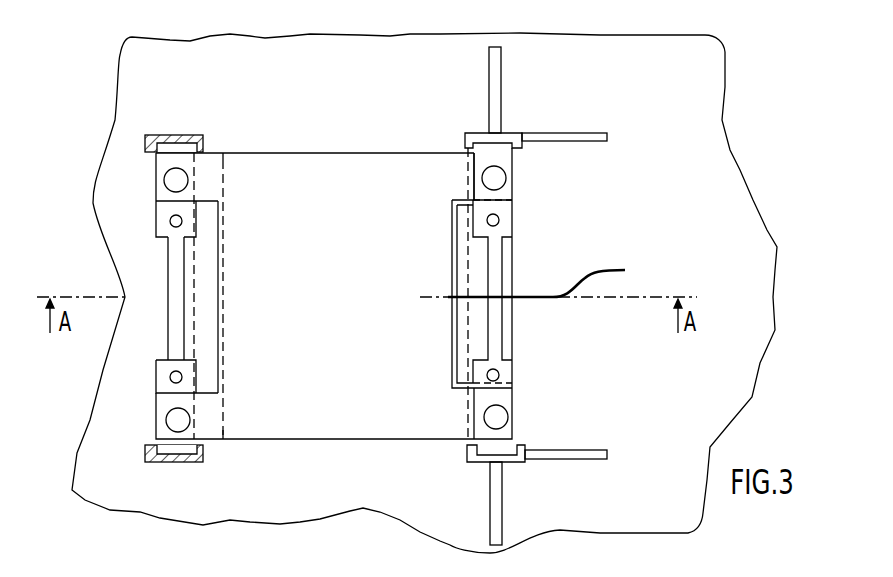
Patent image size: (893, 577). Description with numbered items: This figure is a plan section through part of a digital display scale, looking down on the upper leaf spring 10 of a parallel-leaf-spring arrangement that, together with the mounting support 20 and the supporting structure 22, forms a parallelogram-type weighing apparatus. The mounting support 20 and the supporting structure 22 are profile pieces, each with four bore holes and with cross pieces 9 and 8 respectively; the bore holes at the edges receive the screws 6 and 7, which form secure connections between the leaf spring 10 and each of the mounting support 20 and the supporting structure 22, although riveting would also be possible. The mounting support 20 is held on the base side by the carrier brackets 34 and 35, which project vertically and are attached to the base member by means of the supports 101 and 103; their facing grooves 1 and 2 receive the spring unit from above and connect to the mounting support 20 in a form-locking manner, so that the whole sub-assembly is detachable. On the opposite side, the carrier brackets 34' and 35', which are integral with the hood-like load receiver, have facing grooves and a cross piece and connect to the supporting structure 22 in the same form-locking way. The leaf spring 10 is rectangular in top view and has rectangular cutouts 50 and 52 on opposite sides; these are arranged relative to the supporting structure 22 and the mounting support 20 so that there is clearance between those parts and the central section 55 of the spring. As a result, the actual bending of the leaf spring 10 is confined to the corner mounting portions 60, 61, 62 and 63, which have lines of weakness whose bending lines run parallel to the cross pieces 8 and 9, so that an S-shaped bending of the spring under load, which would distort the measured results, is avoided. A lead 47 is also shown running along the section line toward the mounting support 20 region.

The groove 1 is at (486, 144).
The groove 2 is at (515, 462).
The screw 6 is at (180, 178).
The screw 7 is at (170, 420).
The cross piece 8 is at (168, 275).
The cross piece 9 is at (502, 258).
The leaf spring 10 is at (306, 411).
The mounting support 20 is at (513, 168).
The supporting structure 22 is at (156, 212).
The carrier bracket 34 is at (510, 117).
The carrier bracket 34' is at (174, 116).
The carrier bracket 35 is at (518, 436).
The carrier bracket 35' is at (169, 475).
The connecting wire 47 is at (610, 268).
The rectangular cutout 50 is at (218, 250).
The rectangular cutout 52 is at (458, 258).
The central section 55 is at (377, 291).
The corner mounting portion 60 is at (218, 168).
The corner mounting portion 61 is at (218, 403).
The corner mounting portion 62 is at (468, 160).
The corner mounting portion 63 is at (472, 406).
The support 101 is at (605, 131).
The support 103 is at (610, 455).